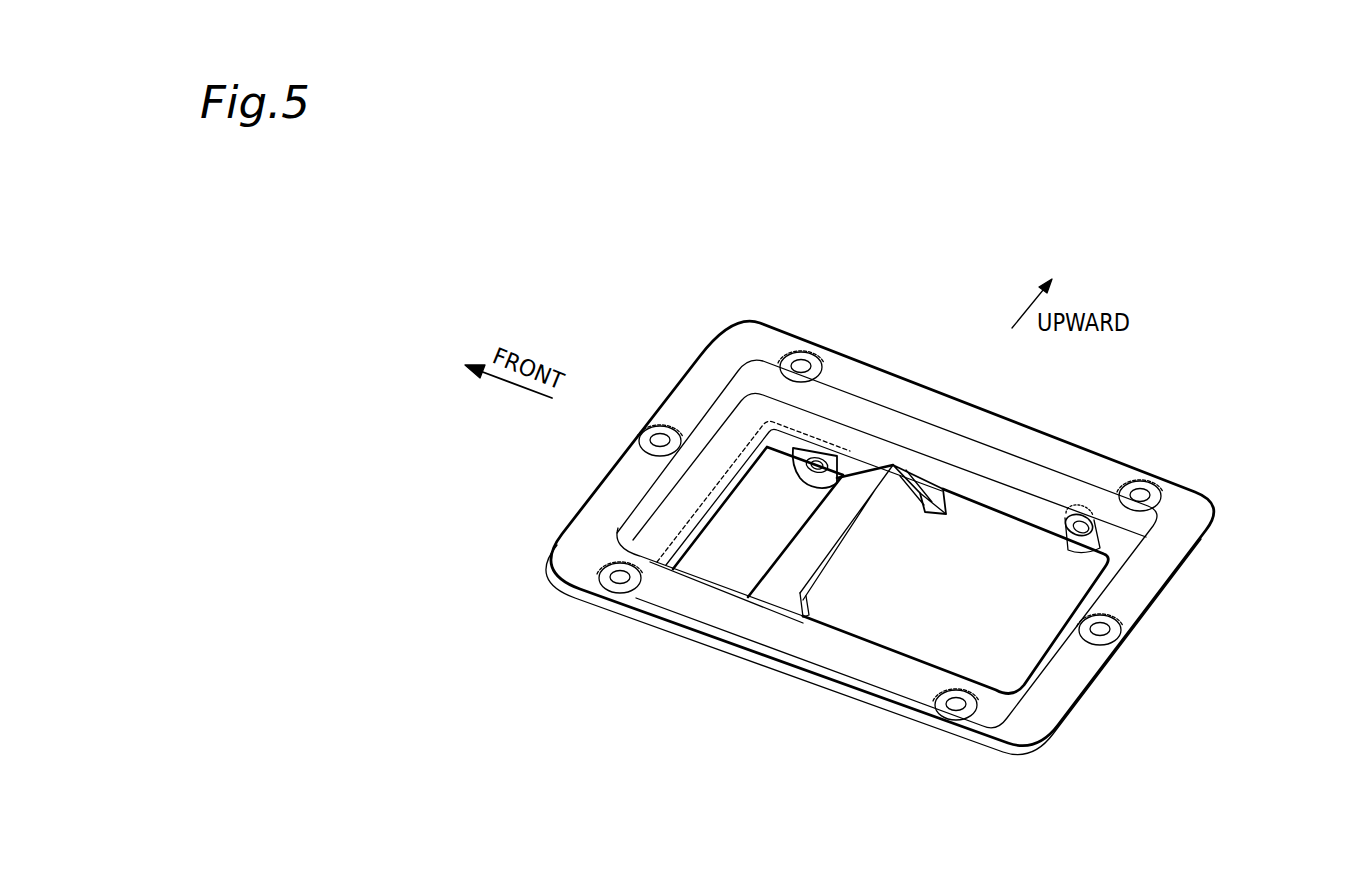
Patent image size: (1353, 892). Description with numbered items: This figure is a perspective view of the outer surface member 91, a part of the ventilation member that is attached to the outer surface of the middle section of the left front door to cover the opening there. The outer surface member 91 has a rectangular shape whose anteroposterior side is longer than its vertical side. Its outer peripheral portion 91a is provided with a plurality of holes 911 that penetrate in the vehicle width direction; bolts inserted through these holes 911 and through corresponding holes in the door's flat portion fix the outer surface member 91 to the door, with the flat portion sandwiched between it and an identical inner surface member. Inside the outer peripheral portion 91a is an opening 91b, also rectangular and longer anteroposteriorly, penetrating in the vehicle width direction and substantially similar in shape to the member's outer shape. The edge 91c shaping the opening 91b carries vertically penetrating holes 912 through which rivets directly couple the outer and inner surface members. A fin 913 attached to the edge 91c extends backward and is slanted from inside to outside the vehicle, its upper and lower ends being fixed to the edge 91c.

The outer surface member 91 is at (1208, 464).
The outer peripheral portion 91a is at (937, 410).
The opening 91b is at (977, 500).
The edge 91c is at (1034, 510).
The holes 911 is at (662, 438).
The holes 912 is at (818, 462).
The fin 913 is at (815, 538).